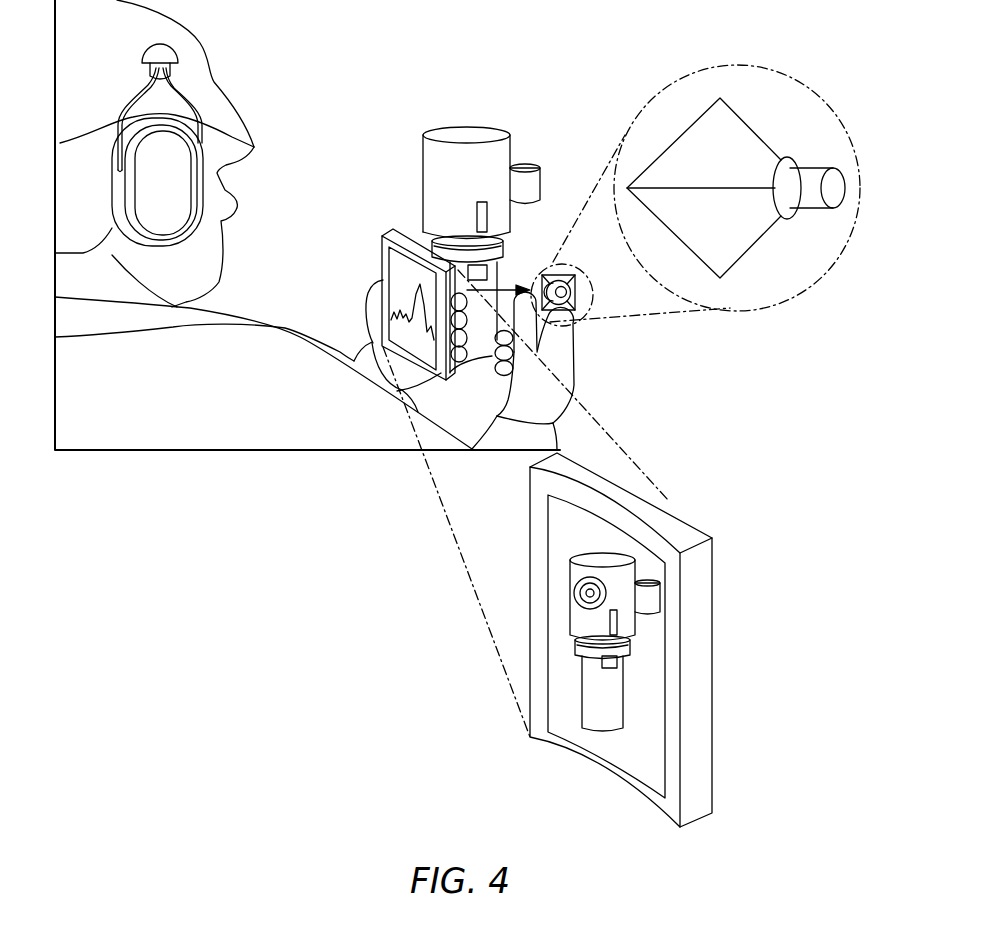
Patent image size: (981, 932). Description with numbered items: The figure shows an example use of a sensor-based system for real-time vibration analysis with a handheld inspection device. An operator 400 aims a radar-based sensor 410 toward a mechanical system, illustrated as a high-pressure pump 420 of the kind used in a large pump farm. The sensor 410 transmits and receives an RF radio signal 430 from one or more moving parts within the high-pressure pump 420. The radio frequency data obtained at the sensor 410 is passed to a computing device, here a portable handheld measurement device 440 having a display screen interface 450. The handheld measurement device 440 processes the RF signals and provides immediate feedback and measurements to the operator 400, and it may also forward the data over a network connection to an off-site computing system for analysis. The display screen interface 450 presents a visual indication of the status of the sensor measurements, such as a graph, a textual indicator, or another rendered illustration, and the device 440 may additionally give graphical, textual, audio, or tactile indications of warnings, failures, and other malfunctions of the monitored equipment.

The operator 400 is at (200, 55).
The radar-based sensor 410 is at (756, 128).
The high-pressure pump 420 is at (423, 179).
The RF radio signal 430 is at (517, 285).
The portable handheld measurement device 440 is at (382, 252).
The display screen interface 450 is at (572, 727).